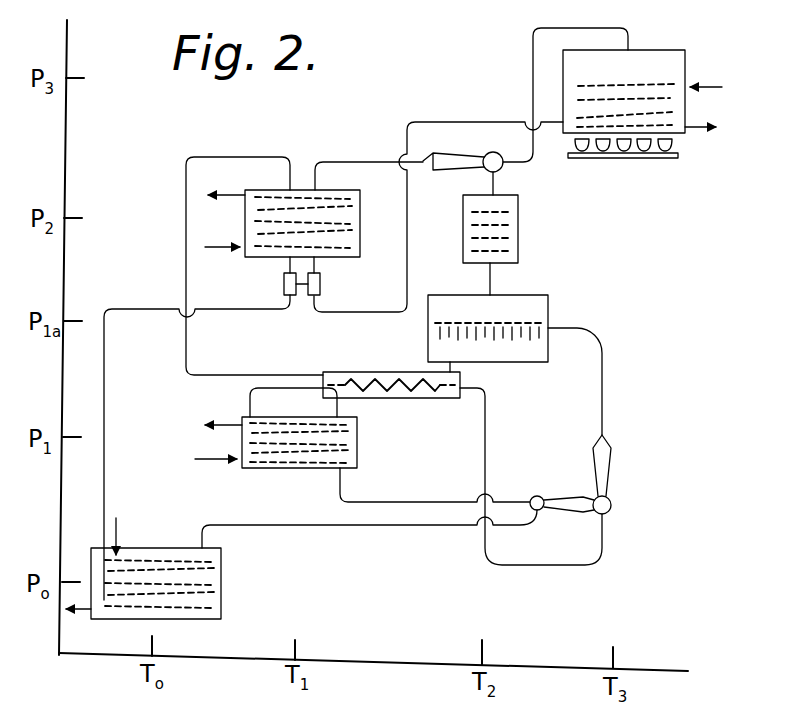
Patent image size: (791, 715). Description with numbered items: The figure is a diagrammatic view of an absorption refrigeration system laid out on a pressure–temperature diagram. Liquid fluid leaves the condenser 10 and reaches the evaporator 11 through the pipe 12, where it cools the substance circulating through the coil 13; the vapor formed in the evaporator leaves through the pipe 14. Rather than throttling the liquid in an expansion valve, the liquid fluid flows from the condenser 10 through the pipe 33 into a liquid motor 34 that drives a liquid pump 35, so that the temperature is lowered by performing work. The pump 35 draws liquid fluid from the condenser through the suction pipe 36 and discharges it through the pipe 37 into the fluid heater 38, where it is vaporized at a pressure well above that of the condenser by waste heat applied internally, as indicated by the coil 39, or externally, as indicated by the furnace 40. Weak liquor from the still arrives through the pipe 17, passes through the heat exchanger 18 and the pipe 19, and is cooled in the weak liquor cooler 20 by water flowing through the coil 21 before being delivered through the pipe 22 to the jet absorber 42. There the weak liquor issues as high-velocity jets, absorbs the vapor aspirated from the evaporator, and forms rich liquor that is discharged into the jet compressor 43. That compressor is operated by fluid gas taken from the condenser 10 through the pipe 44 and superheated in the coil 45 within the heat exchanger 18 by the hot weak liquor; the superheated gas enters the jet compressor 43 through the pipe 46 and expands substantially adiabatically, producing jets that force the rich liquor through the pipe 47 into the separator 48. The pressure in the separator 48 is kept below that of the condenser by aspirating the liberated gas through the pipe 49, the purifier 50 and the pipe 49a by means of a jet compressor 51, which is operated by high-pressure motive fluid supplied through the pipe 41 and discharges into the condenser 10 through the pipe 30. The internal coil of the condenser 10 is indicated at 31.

The condenser 10 is at (245, 205).
The coil of heat exchanger 10 31 is at (320, 215).
The pipe 44 is at (228, 159).
The pipe 30 is at (379, 163).
The pipe 37 is at (441, 124).
The pipe 33 is at (287, 263).
The liquid motor 34 is at (284, 288).
The suction pipe 36 is at (319, 262).
The liquid pump 35 is at (320, 288).
The pipe 12 is at (168, 311).
The jet compressor 51 is at (486, 156).
The pipe 41 is at (532, 56).
The fluid heater 38 is at (688, 72).
The coil 39 is at (647, 112).
The furnace 40 is at (630, 158).
The pipe 49a is at (497, 196).
The purifier 50 is at (520, 241).
The pipe 49 is at (485, 272).
The separator 48 is at (545, 297).
The pipe 17 is at (452, 365).
The pipe 47 is at (604, 391).
The heat exchanger 18 is at (382, 398).
The coil 45 is at (341, 372).
The pipe 19 is at (246, 393).
The weak liquor cooler 20 is at (357, 440).
The coil 21 is at (300, 443).
The pipe 22 is at (390, 501).
The pipe 46 is at (487, 456).
The jet absorber 42 is at (541, 498).
The jet compressor 43 is at (612, 500).
The pipe 14 is at (276, 525).
The evaporator 11 is at (137, 548).
The coil 13 is at (172, 595).